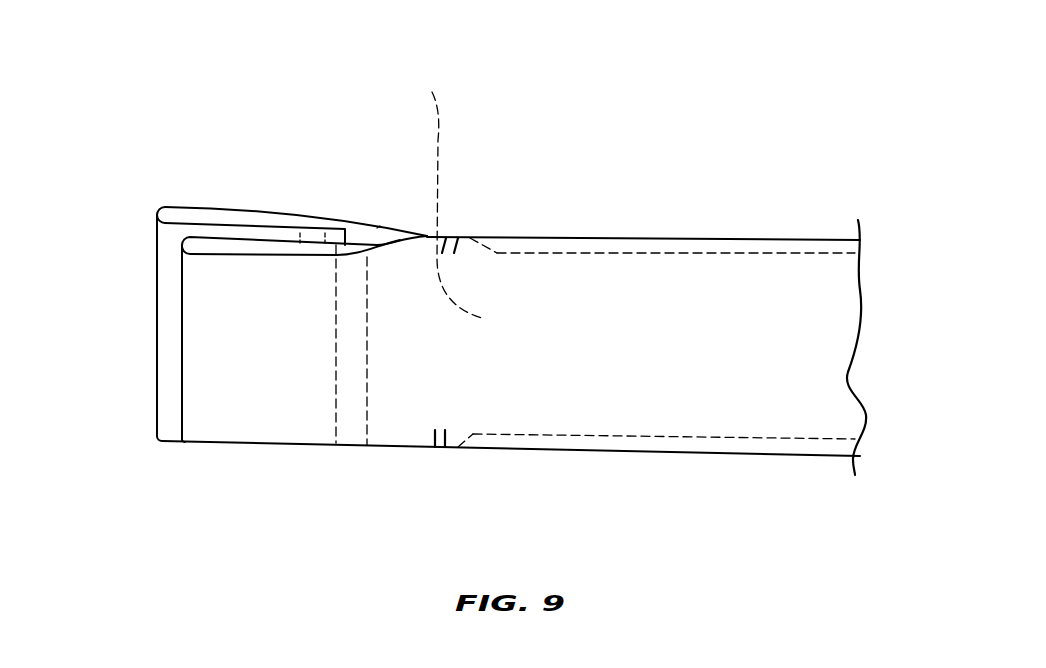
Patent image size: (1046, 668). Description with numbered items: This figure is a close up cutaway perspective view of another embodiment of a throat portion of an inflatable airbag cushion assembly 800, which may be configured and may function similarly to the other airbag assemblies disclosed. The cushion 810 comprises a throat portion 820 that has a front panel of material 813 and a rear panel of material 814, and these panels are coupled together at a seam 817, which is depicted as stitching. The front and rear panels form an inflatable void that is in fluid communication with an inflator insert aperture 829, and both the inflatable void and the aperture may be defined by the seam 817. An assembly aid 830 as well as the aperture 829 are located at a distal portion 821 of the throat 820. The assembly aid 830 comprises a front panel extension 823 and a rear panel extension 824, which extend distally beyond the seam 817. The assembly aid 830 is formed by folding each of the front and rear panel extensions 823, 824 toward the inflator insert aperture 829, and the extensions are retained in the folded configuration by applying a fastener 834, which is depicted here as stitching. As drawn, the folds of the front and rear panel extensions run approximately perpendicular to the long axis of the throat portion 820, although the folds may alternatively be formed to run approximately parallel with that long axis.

The inflatable airbag cushion assembly 800 is at (643, 129).
The cushion 810 is at (724, 174).
The front panel of material 813 is at (617, 357).
The rear panel of material 814 is at (377, 228).
The seam 817 is at (538, 253).
The throat portion 820 is at (766, 277).
The distal portion 821 is at (262, 156).
The front panel extension 823 is at (187, 418).
The rear panel extension 824 is at (163, 326).
The inflator insert aperture 829 is at (435, 192).
The assembly aid 830 is at (189, 194).
The fastener 834 is at (300, 223).